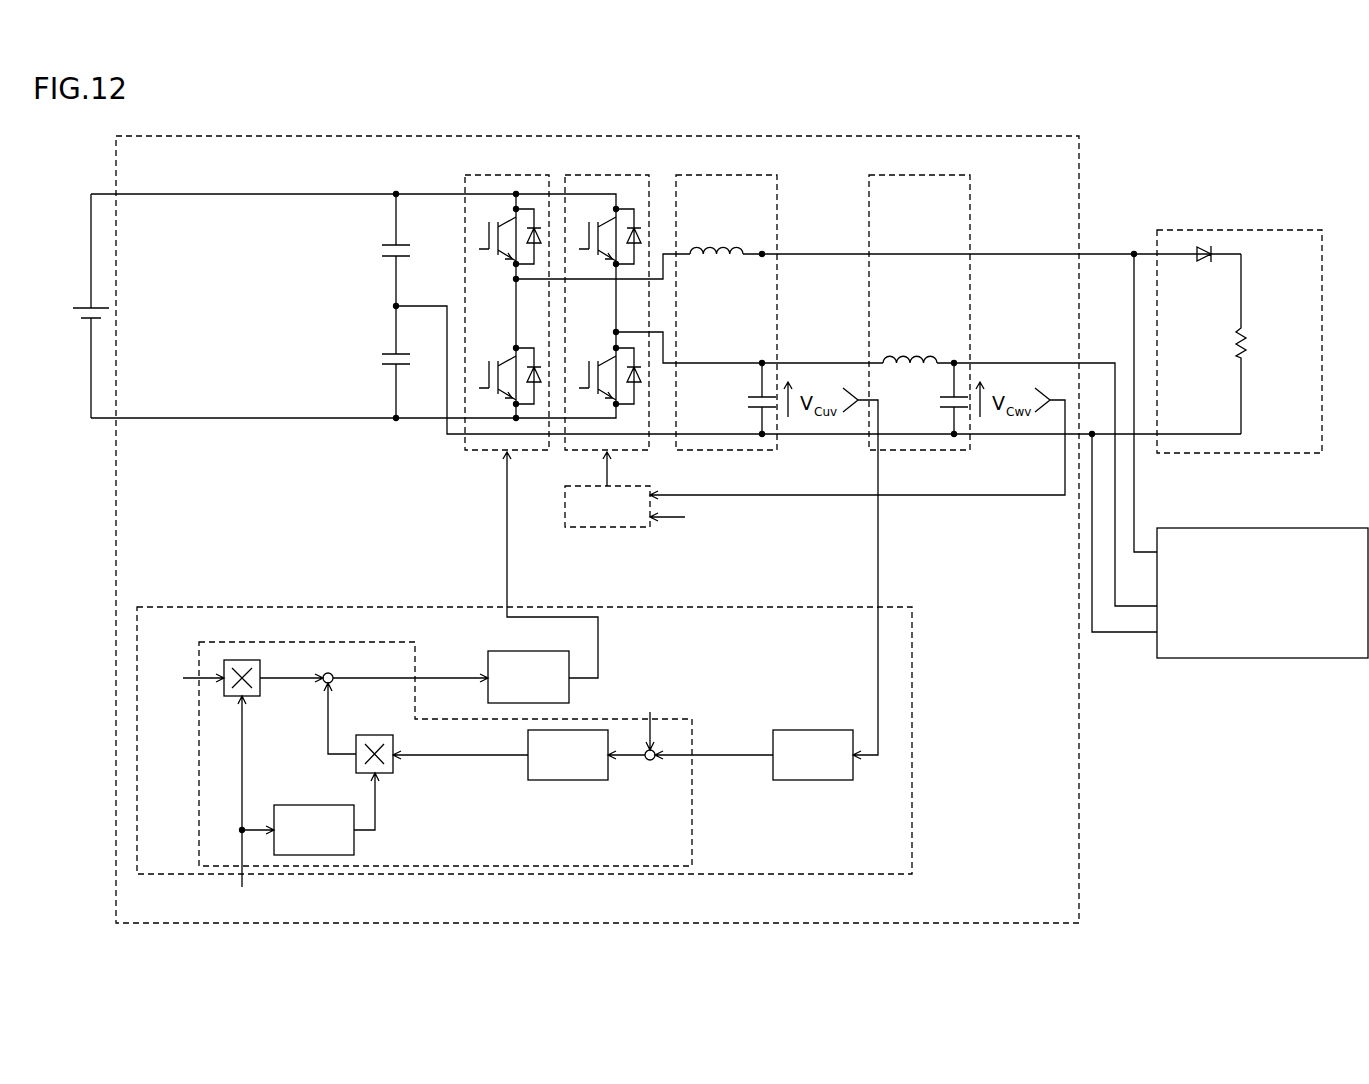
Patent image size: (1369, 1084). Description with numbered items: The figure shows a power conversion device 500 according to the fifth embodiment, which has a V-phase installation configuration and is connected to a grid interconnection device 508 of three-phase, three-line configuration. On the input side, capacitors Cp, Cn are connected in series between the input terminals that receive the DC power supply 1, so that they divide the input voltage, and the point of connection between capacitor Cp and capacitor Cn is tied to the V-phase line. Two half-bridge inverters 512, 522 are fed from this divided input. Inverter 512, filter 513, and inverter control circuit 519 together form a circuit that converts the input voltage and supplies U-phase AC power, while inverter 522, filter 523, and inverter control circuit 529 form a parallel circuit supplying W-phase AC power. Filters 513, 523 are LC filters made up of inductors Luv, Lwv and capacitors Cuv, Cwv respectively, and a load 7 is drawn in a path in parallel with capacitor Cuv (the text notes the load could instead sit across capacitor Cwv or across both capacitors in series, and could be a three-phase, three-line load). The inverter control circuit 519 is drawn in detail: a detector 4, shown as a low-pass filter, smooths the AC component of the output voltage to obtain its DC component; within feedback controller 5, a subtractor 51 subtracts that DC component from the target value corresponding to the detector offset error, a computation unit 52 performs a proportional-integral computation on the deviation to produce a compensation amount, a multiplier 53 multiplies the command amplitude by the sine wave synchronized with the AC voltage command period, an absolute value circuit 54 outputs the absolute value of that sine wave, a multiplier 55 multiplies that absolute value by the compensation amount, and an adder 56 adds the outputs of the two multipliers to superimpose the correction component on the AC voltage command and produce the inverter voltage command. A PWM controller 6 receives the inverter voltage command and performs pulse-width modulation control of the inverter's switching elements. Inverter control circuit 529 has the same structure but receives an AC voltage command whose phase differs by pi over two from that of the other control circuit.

The power conversion device 500 is at (192, 134).
The DC power supply 1 is at (75, 304).
The inverter 512 is at (500, 176).
The inverter 522 is at (596, 176).
The filter 513 is at (729, 176).
The filter 523 is at (921, 176).
The load 7 is at (1189, 229).
The grid interconnection device 508 is at (1208, 527).
The inverter control circuit 529 is at (588, 486).
The inverter control circuit 519 is at (357, 607).
The feedback controller 5 is at (310, 642).
The multiplier 53 is at (240, 660).
The adder 56 is at (335, 673).
The multiplier 55 is at (372, 735).
The absolute value circuit 54 is at (313, 805).
The PWM controller 6 is at (533, 651).
The computation unit 52 is at (568, 781).
The subtractor 51 is at (650, 761).
The detector 4 is at (821, 730).
The capacitor Cp is at (385, 245).
The capacitor Cn is at (385, 354).
The inductor Luv is at (710, 250).
The inductor Lwv is at (903, 358).
The capacitor Cuv is at (752, 395).
The capacitor Cwv is at (946, 395).
The load resistor R is at (1251, 344).